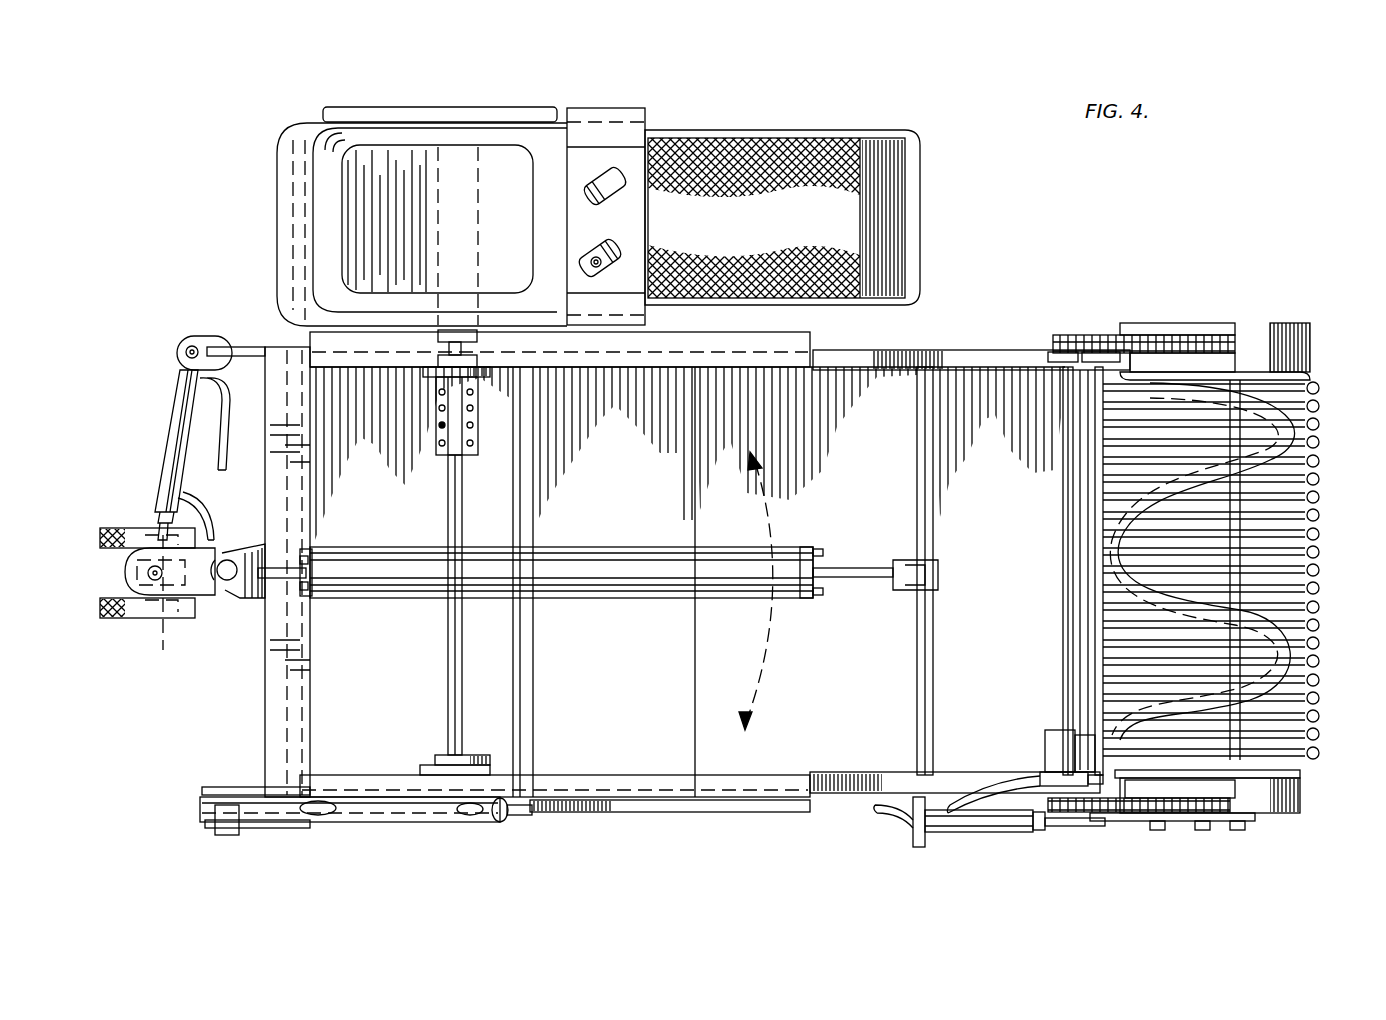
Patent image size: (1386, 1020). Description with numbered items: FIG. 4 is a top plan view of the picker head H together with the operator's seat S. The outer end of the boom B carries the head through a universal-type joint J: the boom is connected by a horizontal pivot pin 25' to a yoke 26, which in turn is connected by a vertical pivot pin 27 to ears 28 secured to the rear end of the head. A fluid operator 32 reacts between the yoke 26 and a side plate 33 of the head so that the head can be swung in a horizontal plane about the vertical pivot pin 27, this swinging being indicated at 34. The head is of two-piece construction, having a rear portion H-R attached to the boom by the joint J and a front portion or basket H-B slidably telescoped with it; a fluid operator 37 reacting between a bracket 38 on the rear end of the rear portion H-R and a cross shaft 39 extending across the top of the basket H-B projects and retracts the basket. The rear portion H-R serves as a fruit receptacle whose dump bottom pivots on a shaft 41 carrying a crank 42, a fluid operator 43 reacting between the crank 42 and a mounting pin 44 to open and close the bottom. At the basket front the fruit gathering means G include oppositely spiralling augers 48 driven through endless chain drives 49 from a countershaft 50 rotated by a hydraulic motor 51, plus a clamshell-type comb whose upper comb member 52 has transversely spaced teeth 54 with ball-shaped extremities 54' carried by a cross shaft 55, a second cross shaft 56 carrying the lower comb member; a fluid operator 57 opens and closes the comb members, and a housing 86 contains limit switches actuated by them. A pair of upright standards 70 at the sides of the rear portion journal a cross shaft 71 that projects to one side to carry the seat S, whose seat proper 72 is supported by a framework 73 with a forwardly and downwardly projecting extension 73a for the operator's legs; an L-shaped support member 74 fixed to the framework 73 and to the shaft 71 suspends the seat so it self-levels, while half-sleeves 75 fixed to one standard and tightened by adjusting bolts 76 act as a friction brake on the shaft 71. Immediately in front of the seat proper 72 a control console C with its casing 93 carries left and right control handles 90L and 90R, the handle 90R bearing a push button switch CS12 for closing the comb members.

The seat framework 73 is at (402, 108).
The seat proper 72 is at (402, 160).
The operator's seat S is at (494, 165).
The console casing 93 is at (585, 130).
The control console C is at (640, 160).
The extension of seat framework 73a is at (795, 138).
The left control handle 90L is at (620, 195).
The right control handle 90R is at (618, 268).
The push button switch CS12 is at (612, 246).
The L-shaped support member 74 is at (456, 330).
The upright standards 70 is at (440, 378).
The half-sleeves 75 is at (450, 412).
The adjusting bolts 76 is at (470, 443).
The cross shaft 71 is at (455, 515).
The fluid operator 37 is at (580, 565).
The horizontal swinging movement 34 is at (785, 692).
The side plate 33 is at (250, 347).
The fluid operator 32 is at (182, 410).
The vertical pivot pin 27 is at (210, 545).
The bracket 38 is at (237, 560).
The yoke 26 is at (125, 575).
The boom B is at (125, 618).
The horizontal pivot pin 25' is at (148, 602).
The universal-type joint J is at (213, 600).
The ears 28 is at (256, 600).
The shaft 41 is at (285, 700).
The crank 42 is at (240, 828).
The fluid operator 43 is at (405, 812).
The mounting pin 44 is at (520, 818).
The rear portion of picker head H-R is at (648, 765).
The front portion or basket H-B is at (855, 757).
The picker head H is at (1017, 352).
The cross shaft 39 is at (925, 632).
The countershaft 50 is at (1065, 495).
The cross shaft 55 is at (1090, 650).
The housing 86 is at (1078, 742).
The hydraulic motor 51 is at (1048, 753).
The fluid operator 57 is at (978, 822).
The endless chain drives 49 is at (1165, 335).
The augers 48 is at (1110, 528).
The teeth 54 is at (1225, 554).
The ball-shaped extremities 54' is at (1334, 397).
The upper comb member 52 is at (1295, 488).
The fruit gathering means G is at (1290, 541).
The cross shaft 56 is at (1275, 710).